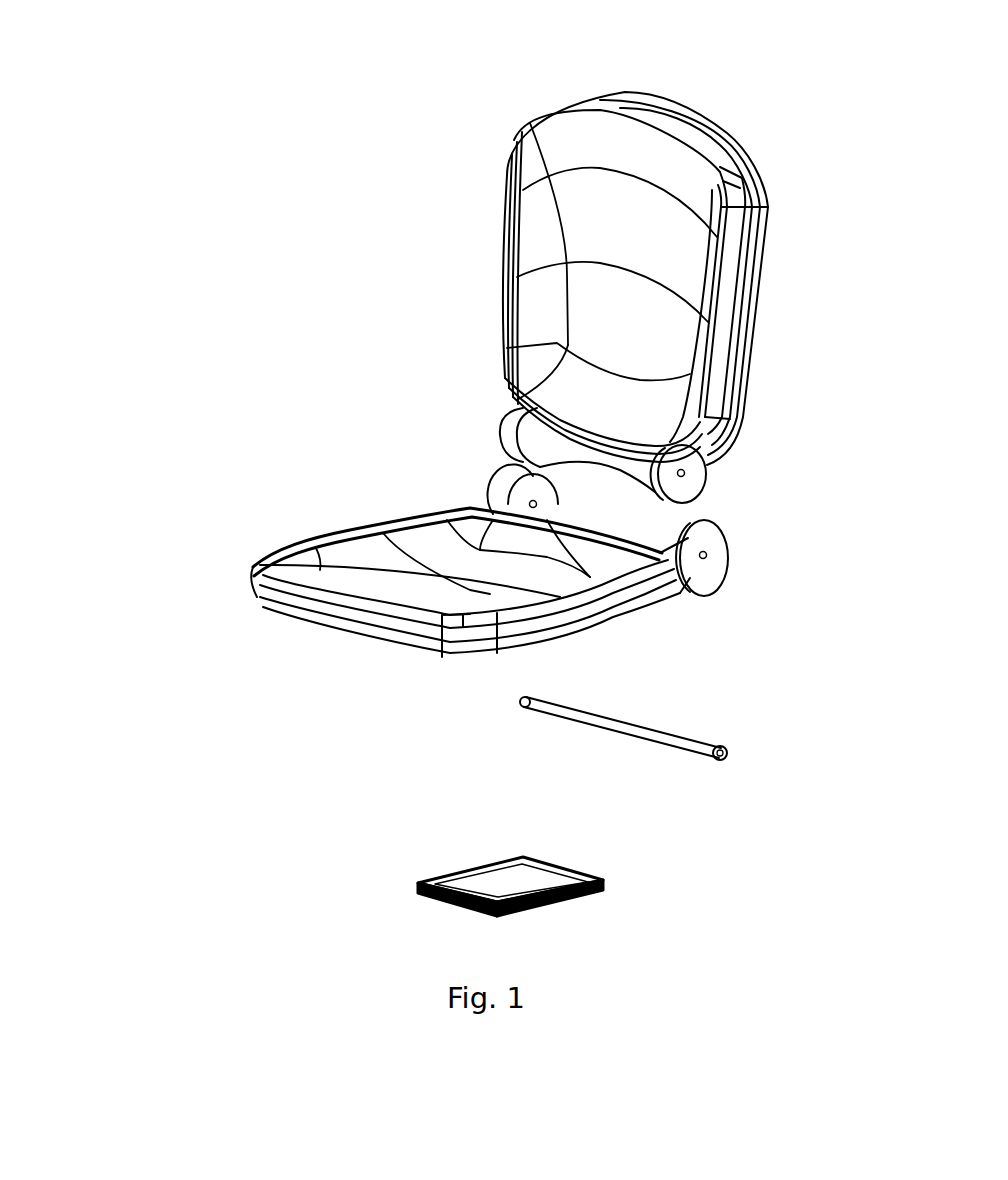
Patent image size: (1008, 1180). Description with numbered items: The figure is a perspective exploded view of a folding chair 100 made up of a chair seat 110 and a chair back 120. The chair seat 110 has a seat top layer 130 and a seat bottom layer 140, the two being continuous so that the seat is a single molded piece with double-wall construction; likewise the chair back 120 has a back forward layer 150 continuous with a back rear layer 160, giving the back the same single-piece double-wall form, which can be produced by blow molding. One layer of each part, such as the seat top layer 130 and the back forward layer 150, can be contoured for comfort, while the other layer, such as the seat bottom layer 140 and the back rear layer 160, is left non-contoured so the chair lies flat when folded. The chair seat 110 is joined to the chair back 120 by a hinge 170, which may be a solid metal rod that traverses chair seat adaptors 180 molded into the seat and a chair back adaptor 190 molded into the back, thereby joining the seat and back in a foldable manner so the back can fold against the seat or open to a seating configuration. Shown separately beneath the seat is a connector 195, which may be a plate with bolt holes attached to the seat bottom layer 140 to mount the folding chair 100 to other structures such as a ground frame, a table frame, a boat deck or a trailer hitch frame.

The folding chair 100 is at (115, 114).
The chair seat 110 is at (328, 515).
The chair back 120 is at (506, 200).
The seat top layer 130 is at (433, 550).
The seat bottom layer 140 is at (290, 625).
The back forward layer 150 is at (550, 248).
The back rear layer 160 is at (766, 279).
The hinge 170 is at (690, 732).
The chair seat adaptors 180 is at (493, 478).
The chair back adaptor 190 is at (707, 478).
The connector 195 is at (615, 883).